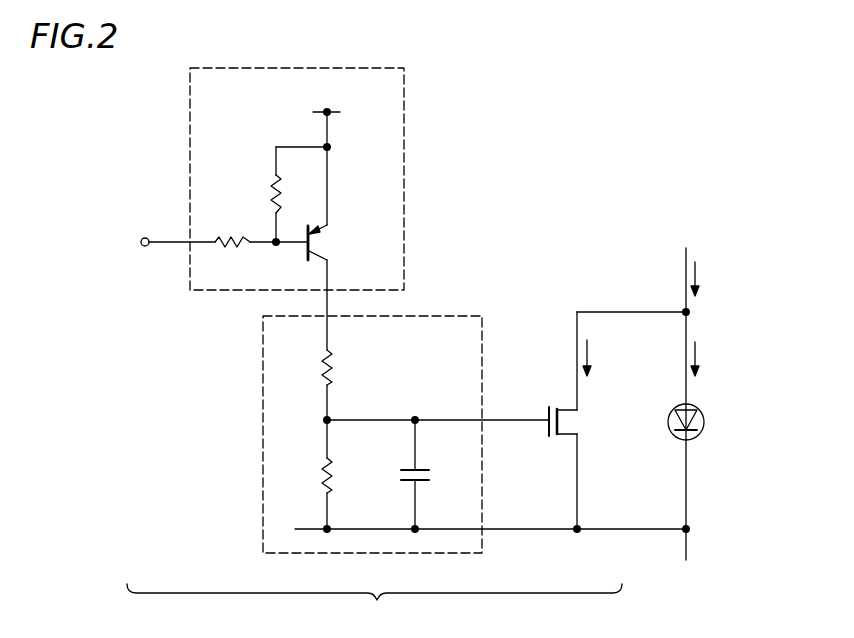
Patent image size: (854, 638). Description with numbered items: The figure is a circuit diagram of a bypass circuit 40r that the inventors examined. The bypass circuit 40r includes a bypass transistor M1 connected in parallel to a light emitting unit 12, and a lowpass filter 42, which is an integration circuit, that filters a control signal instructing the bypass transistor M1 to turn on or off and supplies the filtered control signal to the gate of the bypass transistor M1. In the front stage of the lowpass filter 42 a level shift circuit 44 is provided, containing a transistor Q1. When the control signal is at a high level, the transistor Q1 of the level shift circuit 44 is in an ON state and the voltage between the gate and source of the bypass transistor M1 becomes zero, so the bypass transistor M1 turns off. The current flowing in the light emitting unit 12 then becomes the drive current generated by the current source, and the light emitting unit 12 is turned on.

The light emitting unit 12 is at (704, 419).
The lowpass filter 42 is at (263, 459).
The level shift circuit 44 is at (281, 209).
The bypass circuit 40r is at (374, 605).
The transistor Q1 is at (335, 242).
The bypass transistor M1 is at (583, 421).